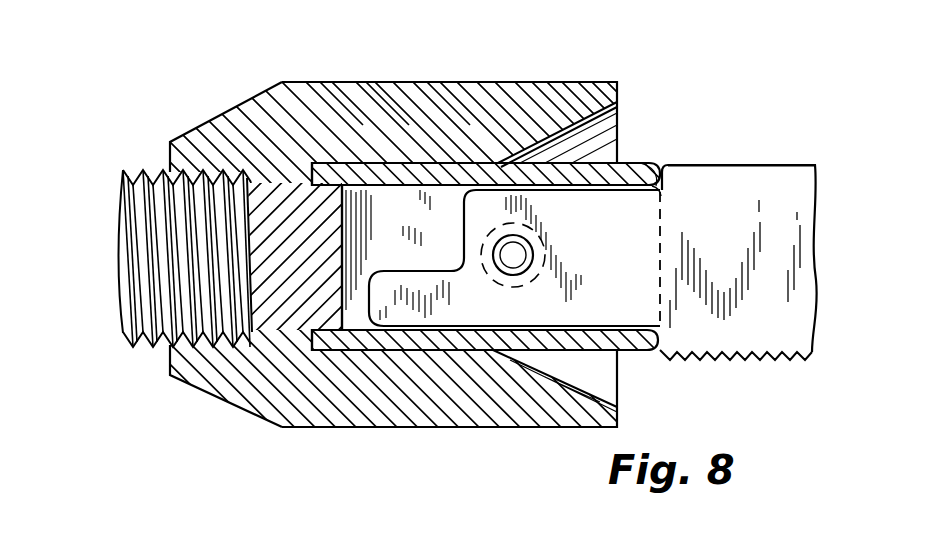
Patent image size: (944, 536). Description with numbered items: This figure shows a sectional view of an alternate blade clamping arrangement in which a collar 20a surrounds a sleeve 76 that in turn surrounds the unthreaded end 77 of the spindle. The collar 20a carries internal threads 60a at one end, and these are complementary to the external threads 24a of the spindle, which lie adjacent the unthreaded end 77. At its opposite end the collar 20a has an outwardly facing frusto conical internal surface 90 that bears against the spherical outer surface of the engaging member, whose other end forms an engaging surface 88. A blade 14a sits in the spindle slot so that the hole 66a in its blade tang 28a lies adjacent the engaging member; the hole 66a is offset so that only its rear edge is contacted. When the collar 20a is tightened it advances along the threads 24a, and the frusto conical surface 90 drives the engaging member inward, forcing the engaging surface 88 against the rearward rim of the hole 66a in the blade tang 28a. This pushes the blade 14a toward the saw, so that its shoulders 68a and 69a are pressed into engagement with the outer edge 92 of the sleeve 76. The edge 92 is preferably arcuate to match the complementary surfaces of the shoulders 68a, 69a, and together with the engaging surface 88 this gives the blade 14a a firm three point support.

The collar 20a is at (535, 82).
The internal threads 60a is at (290, 172).
The external threads 24a is at (155, 332).
The unthreaded end 77 is at (392, 183).
The shoulder 69a is at (648, 352).
The frusto conical internal surface 90 is at (616, 112).
The sleeve 76 is at (632, 163).
The blade tang 28a is at (634, 263).
The hole 66a is at (495, 253).
The engaging surface 88 is at (517, 236).
The blade 14a is at (800, 185).
The shoulder 68a is at (661, 166).
The outer edge 92 is at (652, 188).